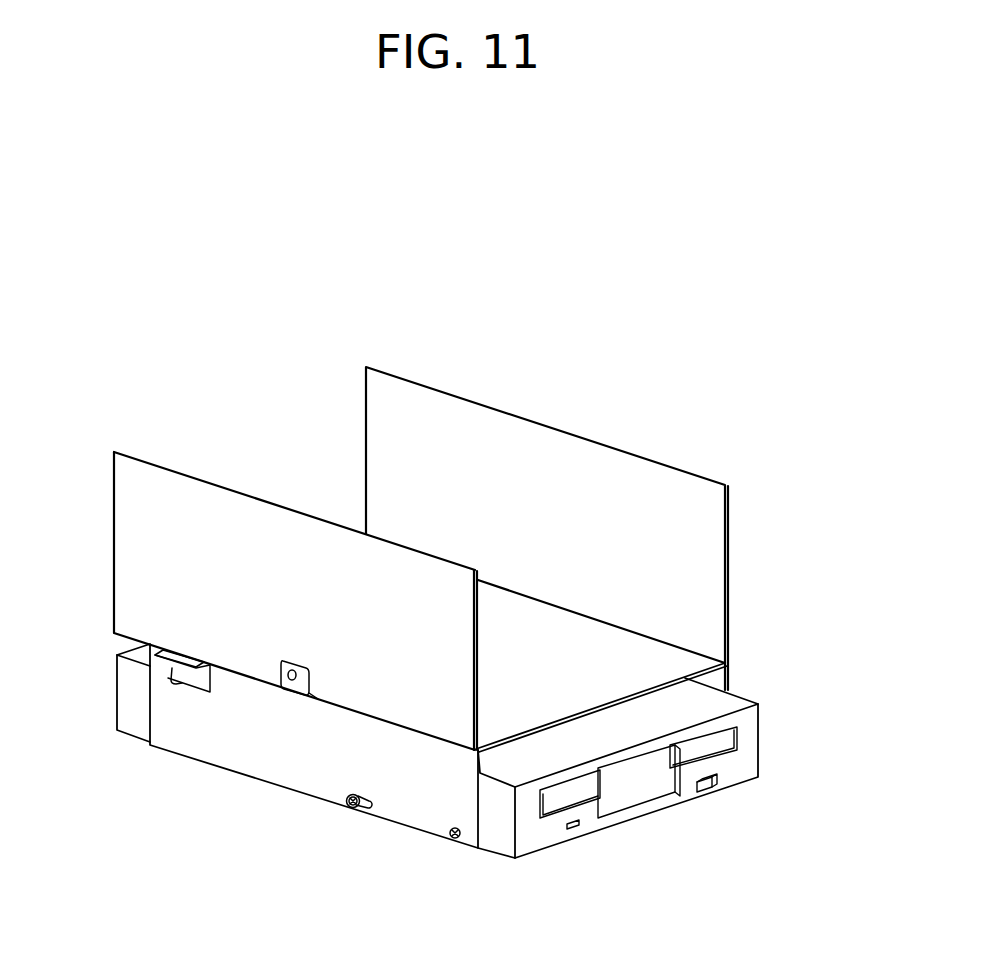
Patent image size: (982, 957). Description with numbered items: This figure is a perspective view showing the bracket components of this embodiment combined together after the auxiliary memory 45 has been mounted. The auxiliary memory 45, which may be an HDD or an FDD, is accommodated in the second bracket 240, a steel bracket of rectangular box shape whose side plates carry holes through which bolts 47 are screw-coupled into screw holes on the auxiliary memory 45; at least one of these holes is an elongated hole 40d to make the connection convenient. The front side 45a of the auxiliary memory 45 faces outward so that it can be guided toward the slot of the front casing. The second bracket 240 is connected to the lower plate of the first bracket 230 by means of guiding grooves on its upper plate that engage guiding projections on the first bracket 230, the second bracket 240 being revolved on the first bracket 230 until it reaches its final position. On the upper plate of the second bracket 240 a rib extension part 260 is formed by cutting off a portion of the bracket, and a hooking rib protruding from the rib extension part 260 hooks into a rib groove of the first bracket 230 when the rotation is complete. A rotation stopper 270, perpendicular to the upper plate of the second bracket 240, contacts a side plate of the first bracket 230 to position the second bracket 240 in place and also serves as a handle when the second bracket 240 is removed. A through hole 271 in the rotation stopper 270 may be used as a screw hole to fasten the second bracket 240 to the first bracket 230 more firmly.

The first bracket 230 is at (636, 440).
The second bracket 240 is at (140, 701).
The rib extension part 260 is at (185, 678).
The rotation stopper 270 is at (296, 698).
The through hole 271 is at (291, 680).
The elongated hole 40d is at (346, 801).
The bolt 47 is at (352, 808).
The auxiliary memory 45 is at (631, 804).
The front side of the auxiliary memory 45a is at (748, 782).